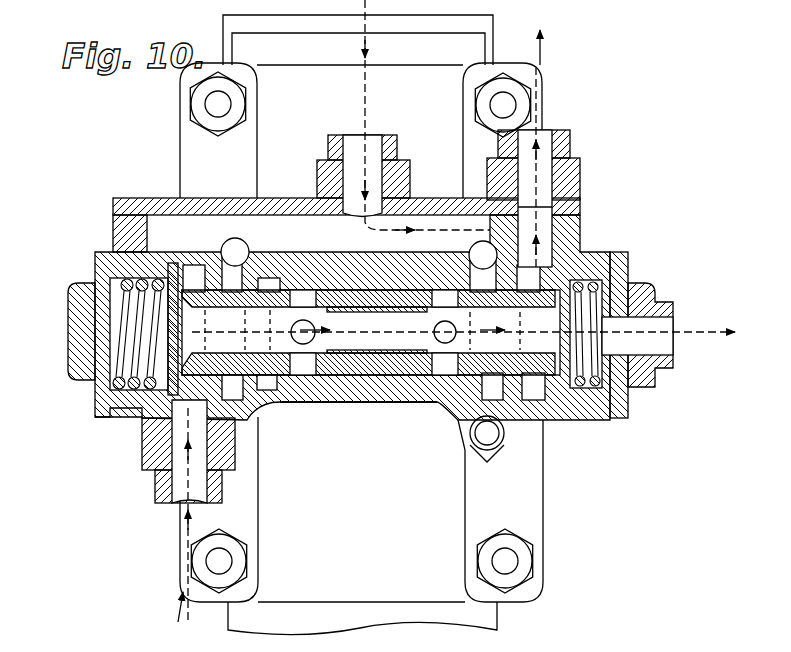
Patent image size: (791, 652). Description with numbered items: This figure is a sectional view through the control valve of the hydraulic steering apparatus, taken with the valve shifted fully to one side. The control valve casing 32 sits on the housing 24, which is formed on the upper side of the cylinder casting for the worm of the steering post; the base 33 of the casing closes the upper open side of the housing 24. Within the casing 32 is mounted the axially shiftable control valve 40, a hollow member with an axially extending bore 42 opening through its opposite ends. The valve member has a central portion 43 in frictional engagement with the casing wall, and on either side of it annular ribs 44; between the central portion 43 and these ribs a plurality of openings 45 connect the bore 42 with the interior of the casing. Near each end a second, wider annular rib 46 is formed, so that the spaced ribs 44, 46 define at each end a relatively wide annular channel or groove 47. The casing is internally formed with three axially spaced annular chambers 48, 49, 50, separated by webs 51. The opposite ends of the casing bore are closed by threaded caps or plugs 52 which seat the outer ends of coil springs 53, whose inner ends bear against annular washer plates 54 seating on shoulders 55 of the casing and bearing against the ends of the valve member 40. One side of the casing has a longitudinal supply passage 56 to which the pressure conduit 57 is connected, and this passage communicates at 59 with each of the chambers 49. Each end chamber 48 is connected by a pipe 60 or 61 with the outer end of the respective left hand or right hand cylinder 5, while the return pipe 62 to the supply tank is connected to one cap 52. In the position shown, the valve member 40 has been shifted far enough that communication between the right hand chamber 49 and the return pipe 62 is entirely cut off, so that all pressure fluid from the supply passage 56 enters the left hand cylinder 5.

The cylinder 5 is at (233, 26).
The housing 24 is at (355, 612).
The control valve casing 32 is at (395, 402).
The base 33 is at (361, 332).
The control valve 40 is at (415, 395).
The bore 42 is at (344, 345).
The central portion 43 is at (345, 300).
The annular rib 44 is at (292, 290).
The opening 45 is at (296, 326).
The annular rib 46 is at (226, 268).
The annular channel 47 is at (362, 357).
The annular chamber 48 is at (188, 265).
The annular chamber 49 is at (240, 248).
The annular chamber 50 is at (268, 278).
The web 51 is at (248, 425).
The threaded cap 52 is at (70, 299).
The coil spring 53 is at (130, 368).
The annular washer plate 54 is at (80, 383).
The shoulder 55 is at (128, 343).
The supply passage 56 is at (428, 220).
The conduit 57 is at (335, 137).
The communication 59 is at (255, 240).
The pipe 60 is at (156, 490).
The pipe 61 is at (572, 134).
The return pipe 62 is at (665, 349).